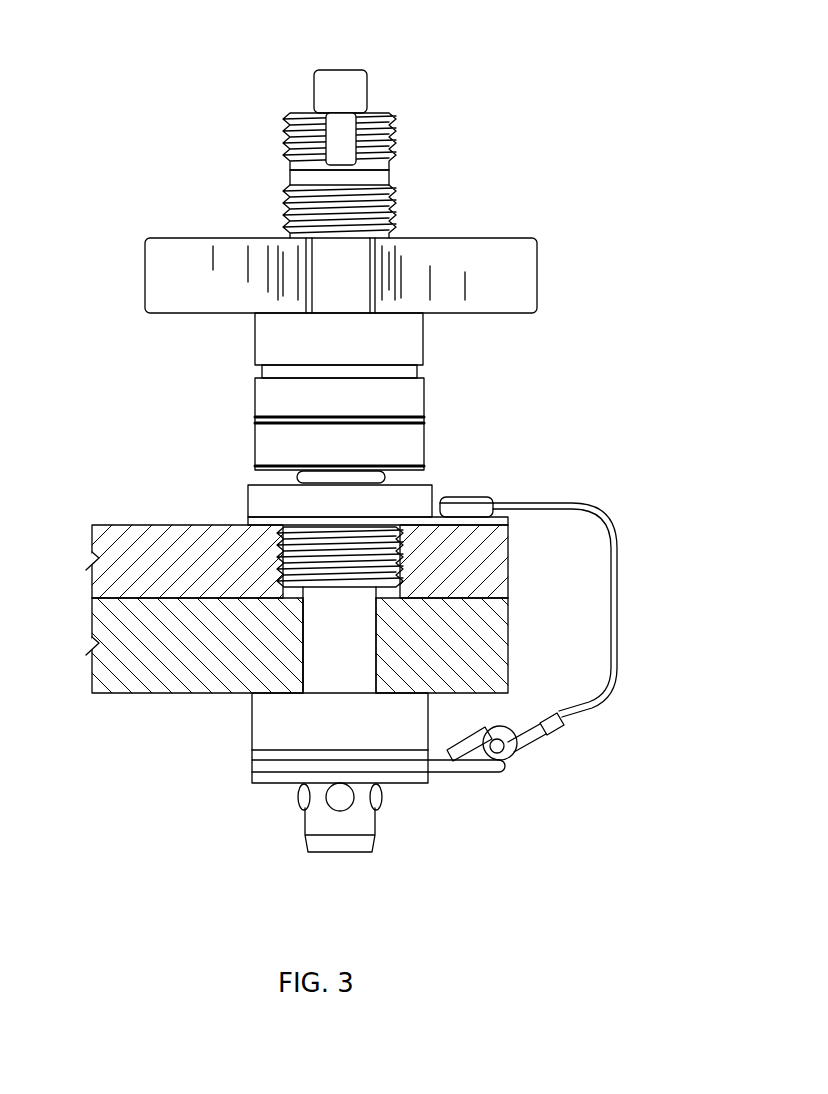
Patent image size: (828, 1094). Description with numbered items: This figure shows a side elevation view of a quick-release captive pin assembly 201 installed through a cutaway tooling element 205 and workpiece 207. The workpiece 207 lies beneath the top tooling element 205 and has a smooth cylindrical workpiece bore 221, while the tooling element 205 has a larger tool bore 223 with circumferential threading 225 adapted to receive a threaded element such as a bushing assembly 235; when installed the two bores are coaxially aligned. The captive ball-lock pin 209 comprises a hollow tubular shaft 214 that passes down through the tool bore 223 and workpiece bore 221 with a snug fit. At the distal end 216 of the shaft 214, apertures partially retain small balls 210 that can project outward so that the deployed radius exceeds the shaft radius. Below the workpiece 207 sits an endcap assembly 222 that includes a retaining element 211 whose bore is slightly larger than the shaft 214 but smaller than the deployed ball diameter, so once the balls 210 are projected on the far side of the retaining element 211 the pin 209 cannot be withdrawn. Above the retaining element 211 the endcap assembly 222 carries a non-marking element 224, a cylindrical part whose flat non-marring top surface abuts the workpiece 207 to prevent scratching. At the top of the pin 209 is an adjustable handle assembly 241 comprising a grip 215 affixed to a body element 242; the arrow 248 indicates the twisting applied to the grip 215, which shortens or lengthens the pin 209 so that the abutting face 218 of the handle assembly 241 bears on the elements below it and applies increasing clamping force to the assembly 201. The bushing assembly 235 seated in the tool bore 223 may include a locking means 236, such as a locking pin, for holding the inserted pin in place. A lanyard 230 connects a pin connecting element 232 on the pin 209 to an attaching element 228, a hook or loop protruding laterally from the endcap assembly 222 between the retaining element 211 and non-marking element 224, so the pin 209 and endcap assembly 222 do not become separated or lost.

The quick-release captive pin assembly 201 is at (151, 53).
The captive ball-lock pin 209 is at (343, 80).
The grip 215 is at (547, 226).
The rotation direction 248 is at (451, 314).
The handle assembly 241 is at (270, 345).
The body element 242 is at (420, 395).
The abutting face 218 is at (263, 422).
The bushing assembly 235 is at (265, 462).
The locking means 236 is at (300, 478).
The tool bore 223 is at (280, 530).
The threaded connection 225 is at (360, 540).
The pin connecting element 232 is at (468, 495).
The lanyard 230 is at (618, 612).
The tooling element 205 is at (460, 560).
The workpiece 207 is at (460, 612).
The shaft 214 is at (350, 640).
The workpiece bore 221 is at (312, 636).
The endcap assembly 222 is at (255, 745).
The non-marking element 224 is at (402, 740).
The retaining element 211 is at (255, 778).
The attaching element 228 is at (505, 765).
The balls 210 is at (338, 800).
The distal end 216 is at (355, 850).